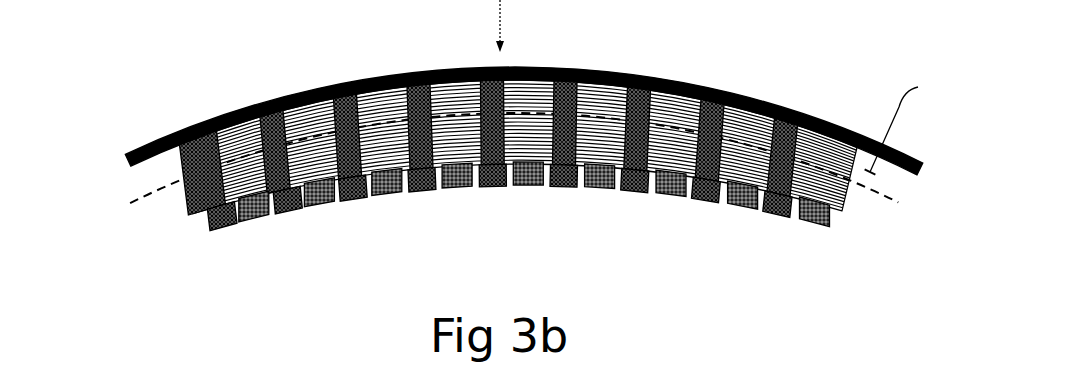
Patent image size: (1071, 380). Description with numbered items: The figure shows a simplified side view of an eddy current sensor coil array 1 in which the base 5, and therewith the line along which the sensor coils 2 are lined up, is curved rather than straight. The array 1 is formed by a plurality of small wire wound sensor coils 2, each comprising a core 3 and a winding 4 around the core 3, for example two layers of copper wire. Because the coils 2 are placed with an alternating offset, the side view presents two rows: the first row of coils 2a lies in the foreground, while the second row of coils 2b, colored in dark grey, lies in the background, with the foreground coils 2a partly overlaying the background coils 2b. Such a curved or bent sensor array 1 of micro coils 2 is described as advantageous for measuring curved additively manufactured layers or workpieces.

The eddy current sensor coil array 1 is at (132, 67).
The sensor coils 2 is at (527, 240).
The first row of coils 2a is at (842, 222).
The second row of coils 2b is at (188, 213).
The core 3 is at (672, 190).
The winding 4 is at (672, 162).
The base 5 is at (633, 72).